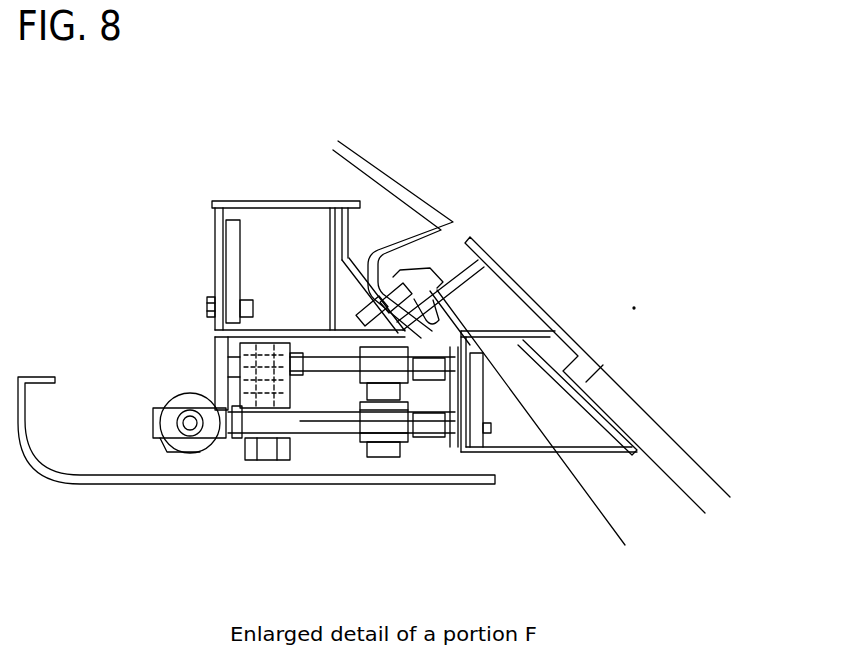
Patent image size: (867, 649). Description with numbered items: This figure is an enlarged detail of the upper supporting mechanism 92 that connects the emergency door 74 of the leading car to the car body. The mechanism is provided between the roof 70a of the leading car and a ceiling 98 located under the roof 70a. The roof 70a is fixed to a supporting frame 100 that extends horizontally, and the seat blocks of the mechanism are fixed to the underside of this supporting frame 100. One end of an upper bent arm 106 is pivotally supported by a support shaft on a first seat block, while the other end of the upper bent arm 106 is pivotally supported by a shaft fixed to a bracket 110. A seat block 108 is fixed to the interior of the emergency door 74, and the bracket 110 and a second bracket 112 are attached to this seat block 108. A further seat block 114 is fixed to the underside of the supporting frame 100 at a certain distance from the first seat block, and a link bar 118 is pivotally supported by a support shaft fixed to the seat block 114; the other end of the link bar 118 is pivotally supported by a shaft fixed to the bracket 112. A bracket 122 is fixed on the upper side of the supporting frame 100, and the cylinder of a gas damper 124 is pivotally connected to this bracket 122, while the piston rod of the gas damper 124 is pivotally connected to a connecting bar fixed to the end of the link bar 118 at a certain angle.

The roof 70a is at (350, 153).
The emergency door 74 is at (646, 412).
The upper supporting mechanism 92 is at (147, 285).
The ceiling 98 is at (133, 486).
The supporting frame 100 is at (214, 251).
The upper bent arm 106 is at (332, 374).
The seat block 108 is at (512, 453).
The bracket 110 is at (436, 348).
The bracket 112 is at (430, 440).
The seat block 114 is at (262, 340).
The link bar 118 is at (352, 427).
The bracket 122 is at (214, 366).
The gas damper 124 is at (183, 403).